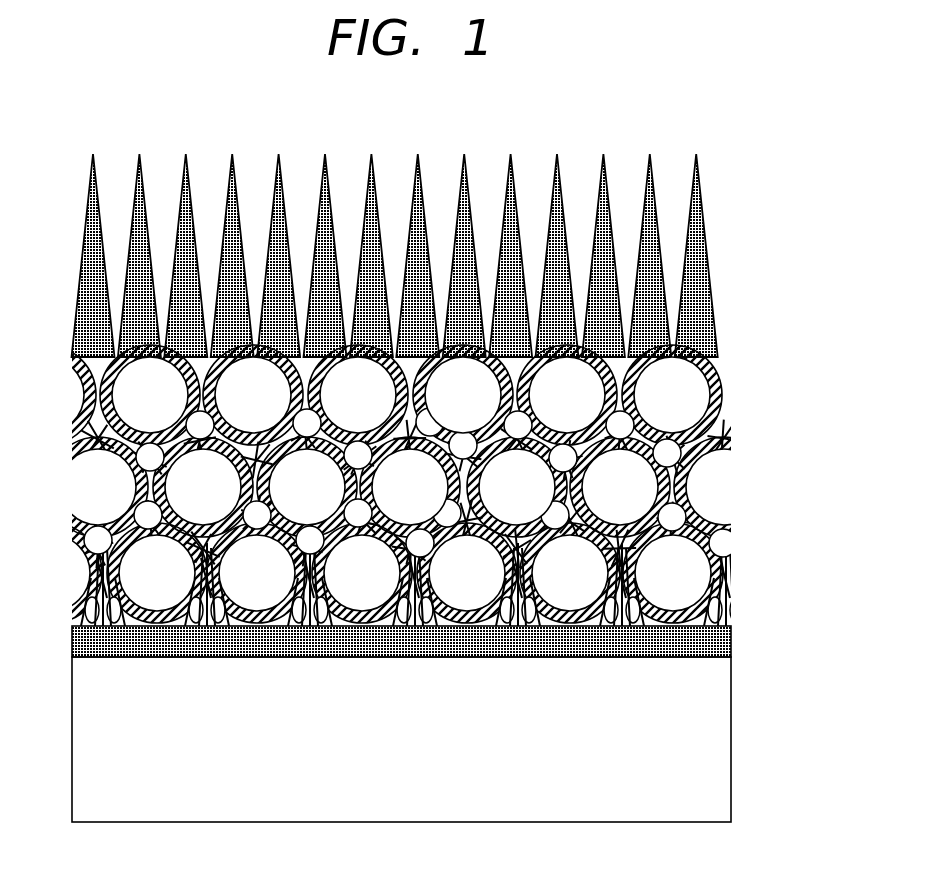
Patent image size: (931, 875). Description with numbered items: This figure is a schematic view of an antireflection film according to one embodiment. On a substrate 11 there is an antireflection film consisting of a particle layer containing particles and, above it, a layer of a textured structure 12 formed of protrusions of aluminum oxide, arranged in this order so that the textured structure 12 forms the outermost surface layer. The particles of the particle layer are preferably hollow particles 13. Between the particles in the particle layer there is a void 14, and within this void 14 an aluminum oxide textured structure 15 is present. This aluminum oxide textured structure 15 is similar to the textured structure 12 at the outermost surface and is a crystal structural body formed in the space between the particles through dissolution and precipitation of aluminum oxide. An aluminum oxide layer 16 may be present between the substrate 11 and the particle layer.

The substrate 11 is at (703, 745).
The textured structure 12 is at (740, 150).
The hollow particles 13 is at (692, 392).
The void 14 is at (707, 450).
The aluminum oxide textured structure 15 is at (640, 566).
The aluminum oxide layer 16 is at (705, 643).